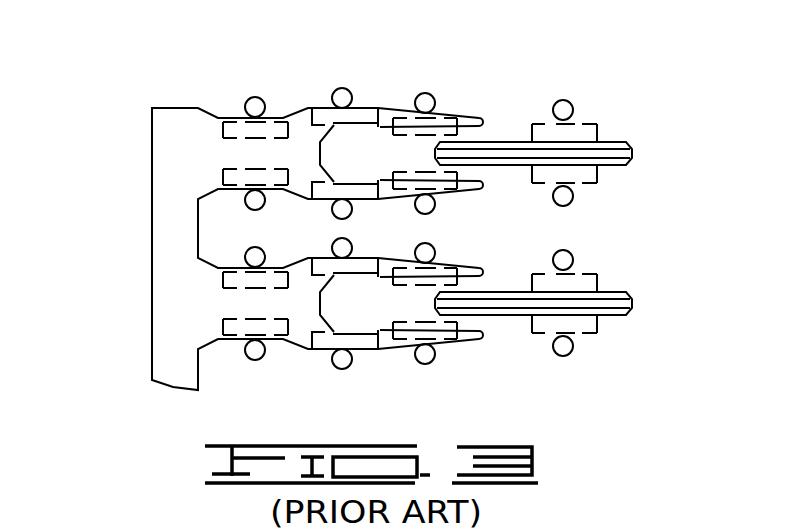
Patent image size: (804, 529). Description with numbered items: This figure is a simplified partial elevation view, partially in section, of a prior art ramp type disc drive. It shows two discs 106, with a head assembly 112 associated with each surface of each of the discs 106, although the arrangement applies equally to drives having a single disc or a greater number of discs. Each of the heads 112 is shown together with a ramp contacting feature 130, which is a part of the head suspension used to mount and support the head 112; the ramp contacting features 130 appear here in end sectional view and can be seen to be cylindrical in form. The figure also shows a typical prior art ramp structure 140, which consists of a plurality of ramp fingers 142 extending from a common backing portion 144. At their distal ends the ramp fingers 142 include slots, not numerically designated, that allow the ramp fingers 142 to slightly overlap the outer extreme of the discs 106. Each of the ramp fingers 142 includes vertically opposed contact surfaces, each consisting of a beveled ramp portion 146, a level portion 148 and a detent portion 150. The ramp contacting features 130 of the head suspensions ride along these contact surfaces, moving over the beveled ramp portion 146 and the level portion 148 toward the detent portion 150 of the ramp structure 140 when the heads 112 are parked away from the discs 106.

The ramp structure 140 is at (163, 72).
The ramp finger 142 is at (276, 122).
The common backing portion 144 is at (173, 232).
The beveled ramp portion 146 is at (492, 80).
The level portion 148 is at (385, 80).
The detent portion 150 is at (305, 80).
The head assembly 112 is at (583, 133).
The disc 106 is at (608, 153).
The ramp contacting feature 130 is at (575, 258).